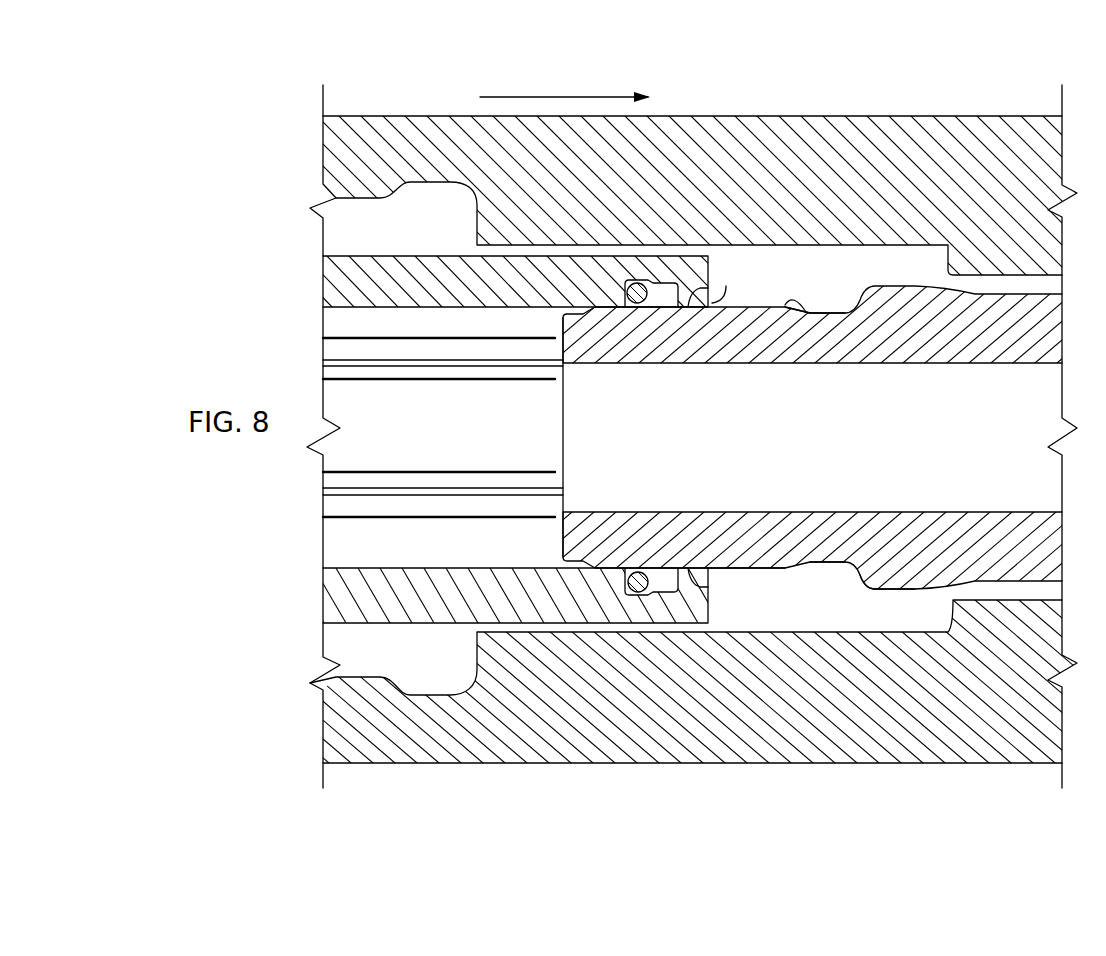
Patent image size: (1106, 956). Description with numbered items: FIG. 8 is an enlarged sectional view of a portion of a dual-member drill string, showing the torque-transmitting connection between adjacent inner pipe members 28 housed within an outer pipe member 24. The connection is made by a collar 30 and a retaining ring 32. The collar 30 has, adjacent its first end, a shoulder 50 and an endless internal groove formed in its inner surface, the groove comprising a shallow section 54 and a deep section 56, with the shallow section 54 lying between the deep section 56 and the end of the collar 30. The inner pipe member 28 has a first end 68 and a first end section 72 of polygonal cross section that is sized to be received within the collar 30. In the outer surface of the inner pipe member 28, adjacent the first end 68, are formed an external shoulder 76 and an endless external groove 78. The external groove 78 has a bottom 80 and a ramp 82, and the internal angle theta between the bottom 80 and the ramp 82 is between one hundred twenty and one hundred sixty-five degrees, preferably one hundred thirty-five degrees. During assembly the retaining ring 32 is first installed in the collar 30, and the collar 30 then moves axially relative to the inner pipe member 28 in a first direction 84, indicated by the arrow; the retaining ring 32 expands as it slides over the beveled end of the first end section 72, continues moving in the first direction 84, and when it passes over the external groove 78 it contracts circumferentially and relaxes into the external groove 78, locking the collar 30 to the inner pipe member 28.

The outer pipe member 24 is at (543, 763).
The inner pipe member 28 is at (997, 580).
The collar 30 is at (422, 627).
The retaining ring 32 is at (638, 593).
The shoulder 50 is at (726, 286).
The shallow section 54 is at (672, 288).
The deep section 56 is at (650, 278).
The first end 68 is at (563, 533).
The first end section 72 is at (748, 572).
The external shoulder 76 is at (867, 583).
The external groove 78 is at (825, 562).
The bottom 80 is at (825, 313).
The ramp 82 is at (785, 305).
The first direction 84 is at (570, 95).